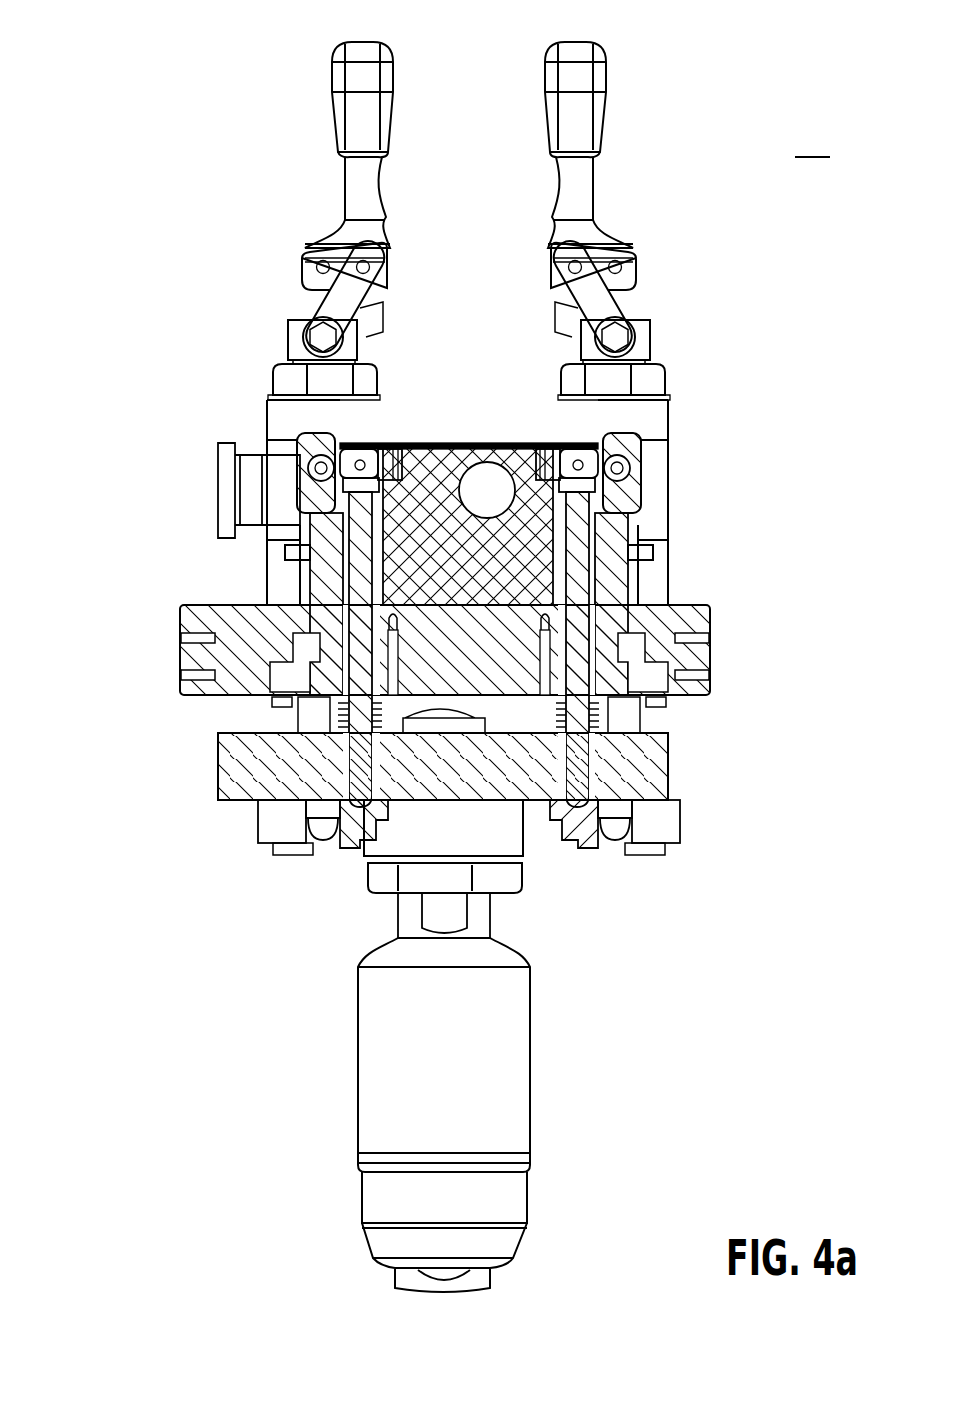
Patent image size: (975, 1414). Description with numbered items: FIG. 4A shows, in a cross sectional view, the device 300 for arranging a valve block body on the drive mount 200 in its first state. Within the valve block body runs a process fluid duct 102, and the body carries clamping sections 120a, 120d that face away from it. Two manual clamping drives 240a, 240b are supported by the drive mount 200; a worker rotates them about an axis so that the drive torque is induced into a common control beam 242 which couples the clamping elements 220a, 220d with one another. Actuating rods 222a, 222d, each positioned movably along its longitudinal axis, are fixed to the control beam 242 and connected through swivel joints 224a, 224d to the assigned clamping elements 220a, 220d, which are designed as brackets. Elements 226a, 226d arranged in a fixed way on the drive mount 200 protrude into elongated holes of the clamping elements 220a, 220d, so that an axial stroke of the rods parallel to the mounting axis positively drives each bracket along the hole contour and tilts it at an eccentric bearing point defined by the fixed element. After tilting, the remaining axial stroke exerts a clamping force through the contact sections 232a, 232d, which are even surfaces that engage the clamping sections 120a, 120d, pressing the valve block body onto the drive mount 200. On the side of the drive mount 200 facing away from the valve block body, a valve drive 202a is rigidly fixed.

The device 300 is at (132, 110).
The manual clamping drive 240a is at (275, 124).
The manual clamping drive 240b is at (655, 125).
The clamping section 120a is at (400, 447).
The clamping section 120d is at (537, 447).
The contact section 232a is at (236, 420).
The contact section 232d is at (702, 420).
The swivel joint 224a is at (372, 476).
The swivel joint 224d is at (566, 476).
The clamping element 220a is at (307, 447).
The clamping element 220d is at (631, 447).
The process fluid duct 102 is at (487, 478).
The element 226a is at (318, 467).
The element 226d is at (620, 467).
The actuating rod 222a is at (330, 592).
The actuating rod 222d is at (608, 592).
The drive mount 200 is at (698, 630).
The control beam 242 is at (660, 770).
The valve drive 202a is at (495, 1065).